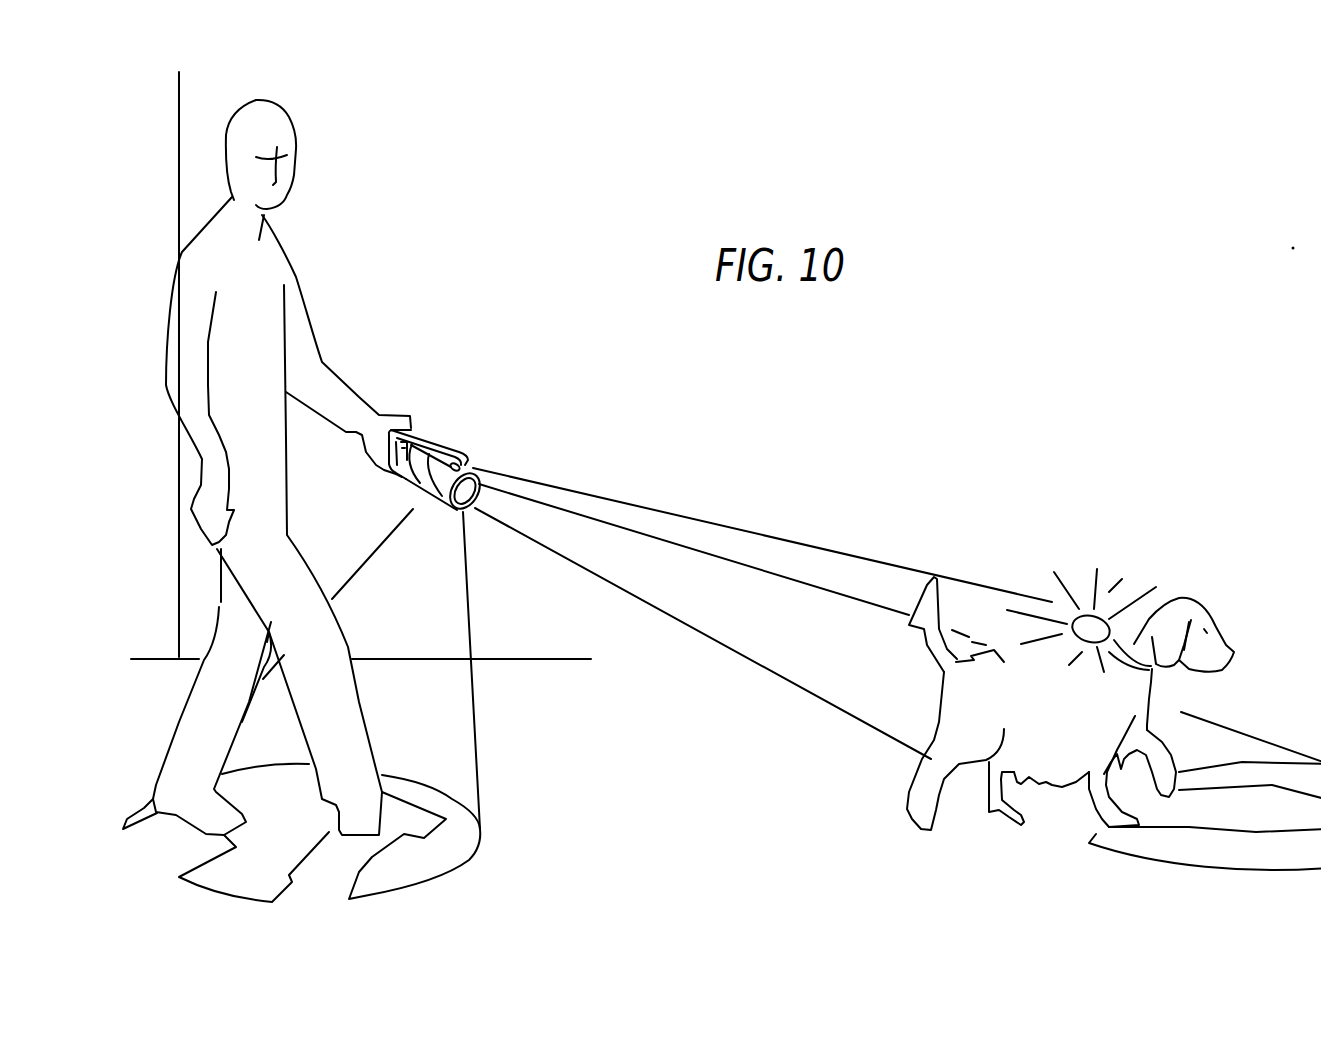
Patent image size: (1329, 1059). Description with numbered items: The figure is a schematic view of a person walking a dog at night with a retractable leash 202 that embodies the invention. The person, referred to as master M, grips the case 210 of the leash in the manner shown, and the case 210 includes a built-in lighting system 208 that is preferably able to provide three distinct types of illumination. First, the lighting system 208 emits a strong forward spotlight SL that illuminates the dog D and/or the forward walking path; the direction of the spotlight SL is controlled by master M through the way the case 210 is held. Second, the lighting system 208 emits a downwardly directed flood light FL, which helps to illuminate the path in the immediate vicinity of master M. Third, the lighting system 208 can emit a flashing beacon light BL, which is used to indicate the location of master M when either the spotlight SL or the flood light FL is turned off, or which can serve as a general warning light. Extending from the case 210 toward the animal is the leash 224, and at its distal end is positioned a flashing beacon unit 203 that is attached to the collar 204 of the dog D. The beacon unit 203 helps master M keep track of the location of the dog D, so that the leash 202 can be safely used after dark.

The master M is at (188, 317).
The retractable leash 202 is at (463, 385).
The case 210 is at (424, 424).
The beacon light BL is at (440, 467).
The lighting system 208 is at (470, 513).
The leash 224 is at (660, 507).
The spotlight SL is at (710, 620).
The flood light FL is at (447, 708).
The dog D is at (1132, 700).
The beacon unit 203 is at (1105, 610).
The collar 204 is at (1177, 600).